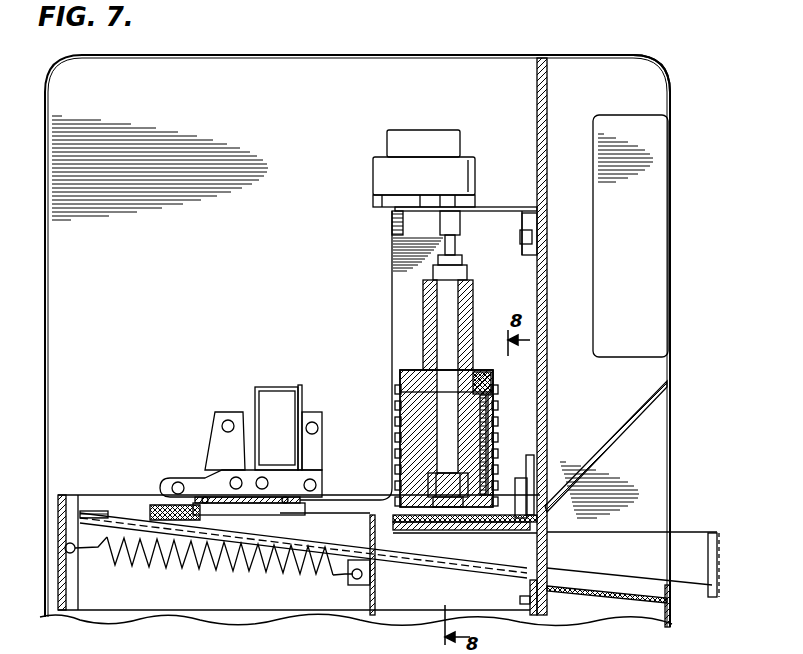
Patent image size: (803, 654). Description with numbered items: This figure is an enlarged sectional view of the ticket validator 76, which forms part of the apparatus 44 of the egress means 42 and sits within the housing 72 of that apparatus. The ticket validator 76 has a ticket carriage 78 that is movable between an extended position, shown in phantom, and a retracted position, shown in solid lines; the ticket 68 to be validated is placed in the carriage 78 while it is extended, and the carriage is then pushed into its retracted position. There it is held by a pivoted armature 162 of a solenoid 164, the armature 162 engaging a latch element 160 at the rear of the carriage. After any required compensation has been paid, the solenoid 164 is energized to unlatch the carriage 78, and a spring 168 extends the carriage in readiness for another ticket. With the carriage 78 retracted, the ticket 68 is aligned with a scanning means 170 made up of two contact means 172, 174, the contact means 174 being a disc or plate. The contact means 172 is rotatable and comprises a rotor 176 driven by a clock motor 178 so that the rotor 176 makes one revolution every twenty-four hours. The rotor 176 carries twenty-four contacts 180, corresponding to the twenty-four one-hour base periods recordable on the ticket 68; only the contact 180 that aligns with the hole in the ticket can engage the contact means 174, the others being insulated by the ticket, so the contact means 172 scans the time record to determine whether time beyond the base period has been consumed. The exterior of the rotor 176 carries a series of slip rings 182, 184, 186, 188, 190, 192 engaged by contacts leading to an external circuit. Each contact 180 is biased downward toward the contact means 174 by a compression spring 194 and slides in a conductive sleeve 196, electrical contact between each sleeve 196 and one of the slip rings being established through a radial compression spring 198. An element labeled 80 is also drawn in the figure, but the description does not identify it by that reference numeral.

The egress means 42 is at (622, 44).
The apparatus 44 is at (658, 68).
The housing 72 is at (465, 54).
The ticket validator 76 is at (296, 258).
The carriage 78 is at (548, 552).
The panel 80 is at (636, 225).
The ticket 68 is at (299, 555).
The latch element 160 is at (160, 500).
The pivoted armature 162 is at (210, 428).
The solenoid 164 is at (288, 410).
The spring 168 is at (180, 568).
The scanning means 170 is at (527, 465).
The contact means 172 is at (535, 440).
The contact means 174 is at (433, 535).
The rotor 176 is at (400, 412).
The clock motor 178 is at (464, 160).
The contacts 180 is at (422, 525).
The slip ring 182 is at (487, 405).
The slip ring 184 is at (492, 430).
The slip ring 186 is at (398, 428).
The slip ring 188 is at (398, 444).
The slip ring 190 is at (398, 462).
The slip ring 192 is at (398, 480).
The compression spring 194 is at (402, 372).
The conductive sleeve 196 is at (493, 410).
The radial compression spring 198 is at (488, 392).